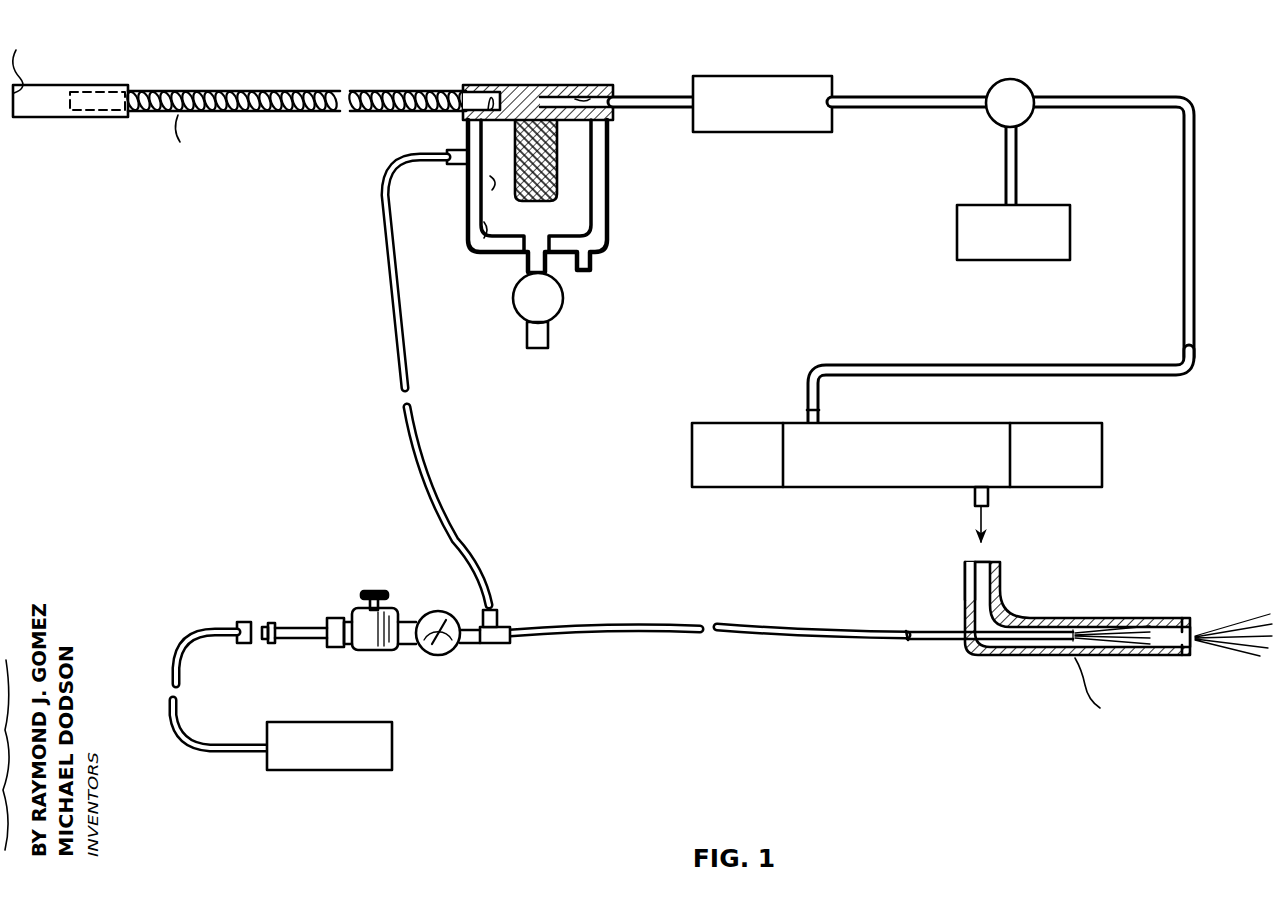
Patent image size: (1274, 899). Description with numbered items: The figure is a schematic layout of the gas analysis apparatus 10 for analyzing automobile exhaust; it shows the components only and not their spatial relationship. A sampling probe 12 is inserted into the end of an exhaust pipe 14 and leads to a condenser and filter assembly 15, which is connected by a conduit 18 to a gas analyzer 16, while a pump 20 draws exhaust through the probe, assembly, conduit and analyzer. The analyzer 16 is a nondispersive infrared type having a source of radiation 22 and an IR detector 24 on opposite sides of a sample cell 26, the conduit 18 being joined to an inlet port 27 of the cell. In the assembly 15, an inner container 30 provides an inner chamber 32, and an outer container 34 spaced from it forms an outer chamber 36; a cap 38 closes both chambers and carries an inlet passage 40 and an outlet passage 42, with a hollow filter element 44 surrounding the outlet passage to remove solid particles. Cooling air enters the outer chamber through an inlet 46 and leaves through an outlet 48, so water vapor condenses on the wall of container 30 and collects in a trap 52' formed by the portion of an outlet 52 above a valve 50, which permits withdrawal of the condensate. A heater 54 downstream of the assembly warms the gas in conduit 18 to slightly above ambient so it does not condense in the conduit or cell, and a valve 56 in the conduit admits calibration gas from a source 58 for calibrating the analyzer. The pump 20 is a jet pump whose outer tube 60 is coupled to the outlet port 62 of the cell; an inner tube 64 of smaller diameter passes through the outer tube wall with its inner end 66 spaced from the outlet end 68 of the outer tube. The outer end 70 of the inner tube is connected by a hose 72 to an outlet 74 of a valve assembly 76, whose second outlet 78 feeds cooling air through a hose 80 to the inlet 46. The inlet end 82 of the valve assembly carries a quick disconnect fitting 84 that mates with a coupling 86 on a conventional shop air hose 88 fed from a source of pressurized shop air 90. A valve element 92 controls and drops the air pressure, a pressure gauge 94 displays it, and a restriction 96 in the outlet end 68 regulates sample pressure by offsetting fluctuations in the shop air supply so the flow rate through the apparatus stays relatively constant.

The gas analysis apparatus 10 is at (312, 385).
The sampling probe 12 is at (260, 95).
The exhaust pipe 14 is at (66, 118).
The condenser and filter assembly 15 is at (632, 220).
The gas analyzer 16 is at (1118, 460).
The conduit 18 is at (985, 363).
The pump 20 is at (1033, 672).
The source of radiation 22 is at (717, 421).
The IR detector 24 is at (1040, 422).
The sample cell 26 is at (845, 489).
The inlet port 27 is at (819, 415).
The inner container 30 is at (488, 186).
The inner chamber 32 is at (488, 232).
The outer container 34 is at (612, 190).
The outer chamber 36 is at (612, 137).
The cap 38 is at (540, 84).
The inlet passage 40 is at (485, 95).
The outlet passage 42 is at (583, 97).
The hollow filter element 44 is at (558, 166).
The inlet 46 is at (452, 147).
The outlet 48 is at (592, 270).
The valve 50 is at (513, 308).
The outlet 52 is at (562, 338).
The trap 52' is at (570, 295).
The heater 54 is at (775, 76).
The valve 56 is at (1027, 82).
The source of calibration gas 58 is at (1072, 245).
The outer tube 60 is at (1108, 620).
The outlet port 62 is at (989, 500).
The inner tube 64 is at (934, 642).
The inner end 66 is at (1078, 640).
The outlet end 68 is at (1192, 618).
The outer end 70 is at (906, 628).
The hose 72 is at (660, 620).
The outlet 74 is at (510, 625).
The valve assembly 76 is at (405, 660).
The second outlet 78 is at (497, 605).
The hose 80 is at (400, 318).
The inlet end 82 is at (297, 640).
The quick disconnect fitting or coupling 84 is at (270, 620).
The mating coupling 86 is at (241, 620).
The shop air hose 88 is at (182, 672).
The source of pressurized shop air 90 is at (357, 772).
The valve element 92 is at (378, 586).
The pressure gauge 94 is at (460, 655).
The restriction 96 is at (1192, 655).